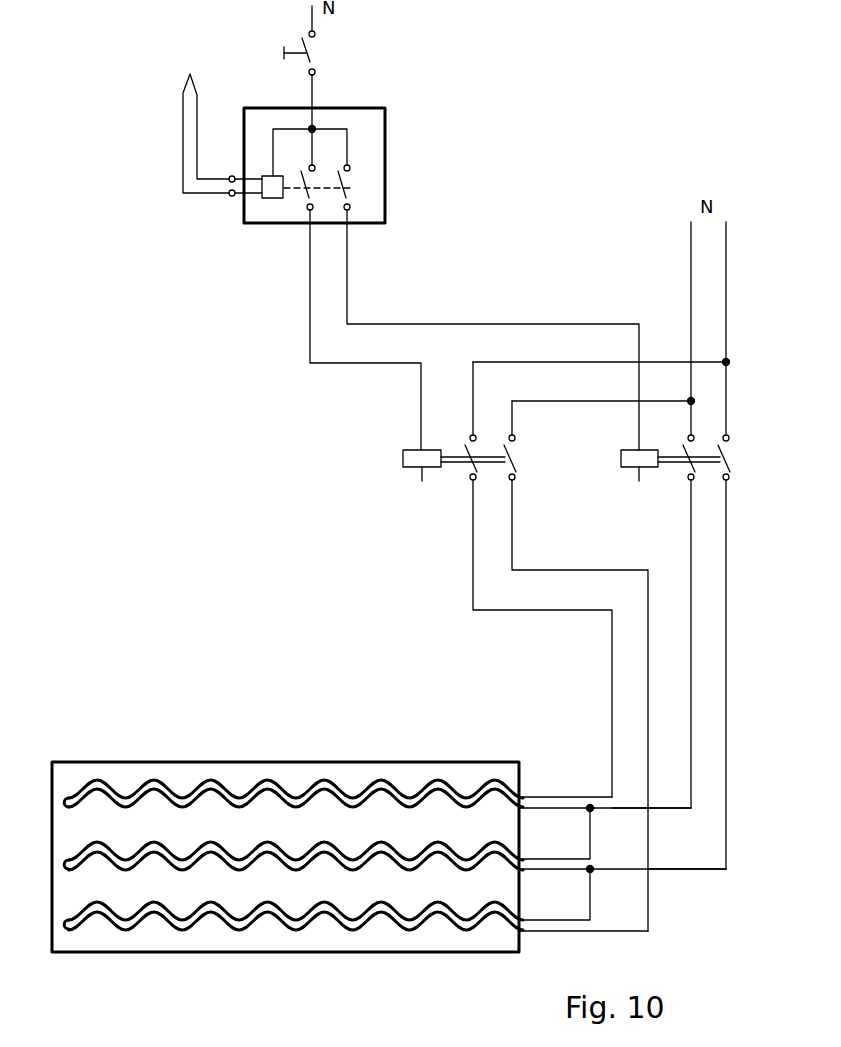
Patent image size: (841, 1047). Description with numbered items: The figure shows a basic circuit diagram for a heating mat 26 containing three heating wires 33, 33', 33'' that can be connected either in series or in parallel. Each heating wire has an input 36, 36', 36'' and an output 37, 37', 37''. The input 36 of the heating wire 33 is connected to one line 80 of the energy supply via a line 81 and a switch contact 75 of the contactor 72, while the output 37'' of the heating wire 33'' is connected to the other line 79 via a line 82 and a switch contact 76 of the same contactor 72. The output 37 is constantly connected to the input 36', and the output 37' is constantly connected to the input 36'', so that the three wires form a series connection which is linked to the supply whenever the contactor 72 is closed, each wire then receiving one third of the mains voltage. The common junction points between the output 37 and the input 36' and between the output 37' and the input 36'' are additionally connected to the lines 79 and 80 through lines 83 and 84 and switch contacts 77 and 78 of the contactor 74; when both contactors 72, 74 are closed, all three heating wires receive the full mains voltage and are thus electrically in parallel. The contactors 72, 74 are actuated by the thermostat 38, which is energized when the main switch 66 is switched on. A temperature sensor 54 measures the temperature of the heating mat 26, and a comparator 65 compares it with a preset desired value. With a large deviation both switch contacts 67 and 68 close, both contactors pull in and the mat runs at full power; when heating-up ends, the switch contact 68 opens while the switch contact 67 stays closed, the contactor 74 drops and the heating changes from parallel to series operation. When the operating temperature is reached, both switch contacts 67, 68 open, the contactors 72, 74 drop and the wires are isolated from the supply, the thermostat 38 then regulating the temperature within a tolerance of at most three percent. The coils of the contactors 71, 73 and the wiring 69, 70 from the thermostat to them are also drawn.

The heating mat 26 is at (177, 752).
The heating wire 33 is at (293, 742).
The heating wire 33' is at (293, 774).
The heating wire 33'' is at (293, 951).
The input 36 is at (565, 738).
The output 37 is at (605, 746).
The input 36' is at (554, 833).
The output 37' is at (622, 891).
The input 36'' is at (554, 924).
The output 37'' is at (583, 955).
The thermostat 38 is at (372, 130).
The temperature sensor 54 is at (180, 135).
The comparator 65 is at (262, 195).
The main switch 66 is at (313, 53).
The switch contact 67 is at (288, 205).
The switch contact 68 is at (358, 190).
The first control line 69 is at (309, 313).
The second control line 70 is at (347, 280).
The first relay coil 71 is at (410, 460).
The contactor 72 is at (459, 472).
The second relay coil 73 is at (640, 463).
The contactor 74 is at (675, 470).
The switch contact 75 is at (473, 462).
The switch contact 76 is at (509, 455).
The switch contact 77 is at (683, 448).
The switch contact 78 is at (723, 460).
The line 79 is at (691, 248).
The line 80 is at (727, 322).
The line 81 is at (473, 525).
The line 82 is at (512, 540).
The line 83 is at (678, 810).
The line 84 is at (678, 870).